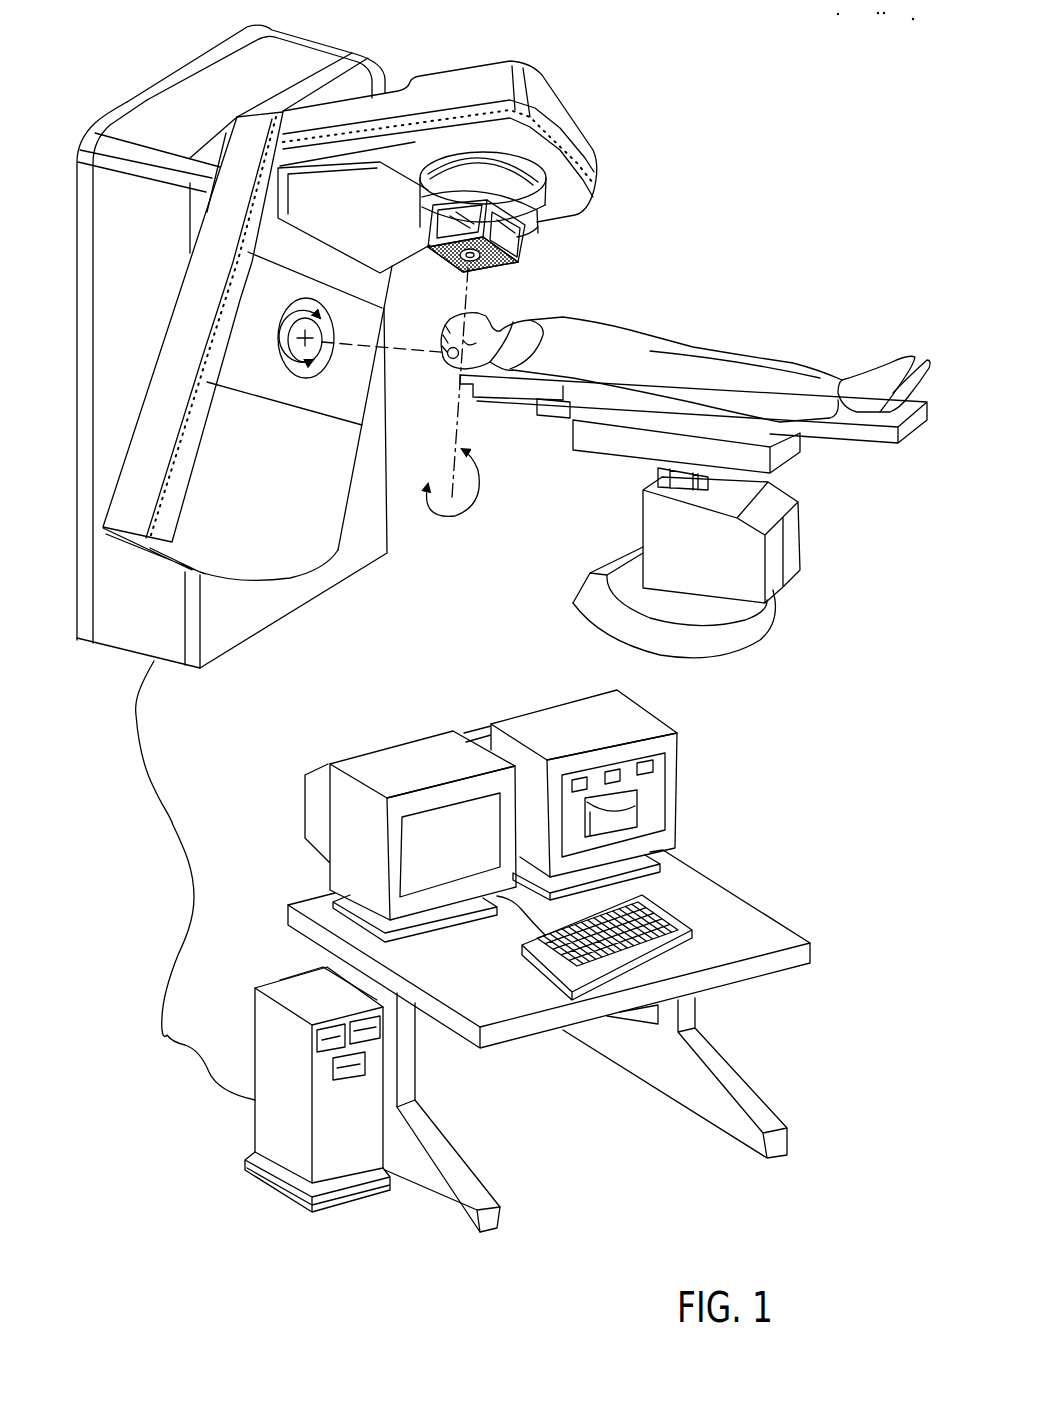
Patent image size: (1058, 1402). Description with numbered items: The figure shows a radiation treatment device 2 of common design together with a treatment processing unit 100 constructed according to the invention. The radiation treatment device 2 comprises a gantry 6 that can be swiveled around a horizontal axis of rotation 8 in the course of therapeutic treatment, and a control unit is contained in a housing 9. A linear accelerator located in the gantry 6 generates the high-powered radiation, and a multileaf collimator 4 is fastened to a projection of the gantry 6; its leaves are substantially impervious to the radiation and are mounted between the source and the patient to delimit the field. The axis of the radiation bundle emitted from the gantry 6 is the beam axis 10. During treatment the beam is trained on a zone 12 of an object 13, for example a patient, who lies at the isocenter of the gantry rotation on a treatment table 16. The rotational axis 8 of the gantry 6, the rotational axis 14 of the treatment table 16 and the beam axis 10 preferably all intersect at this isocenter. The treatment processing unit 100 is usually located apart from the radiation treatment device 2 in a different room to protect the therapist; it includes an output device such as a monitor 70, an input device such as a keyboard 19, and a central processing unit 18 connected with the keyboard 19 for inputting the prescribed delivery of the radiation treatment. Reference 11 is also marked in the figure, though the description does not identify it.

The radiation treatment device 2 is at (436, 680).
The multileaf collimator 4 is at (537, 228).
The gantry 6 is at (160, 417).
The horizontal axis of rotation 8 is at (422, 352).
The housing 9 is at (293, 57).
The beam axis 10 is at (460, 293).
The control console 11 is at (590, 1303).
The zone 12 is at (447, 368).
The object 13 is at (613, 340).
The rotational axis of treatment table 14 is at (452, 443).
The treatment table 16 is at (617, 443).
The central processing unit 18 is at (267, 1123).
The keyboard 19 is at (668, 913).
The monitor 70 is at (676, 778).
The treatment processing unit 100 is at (256, 951).